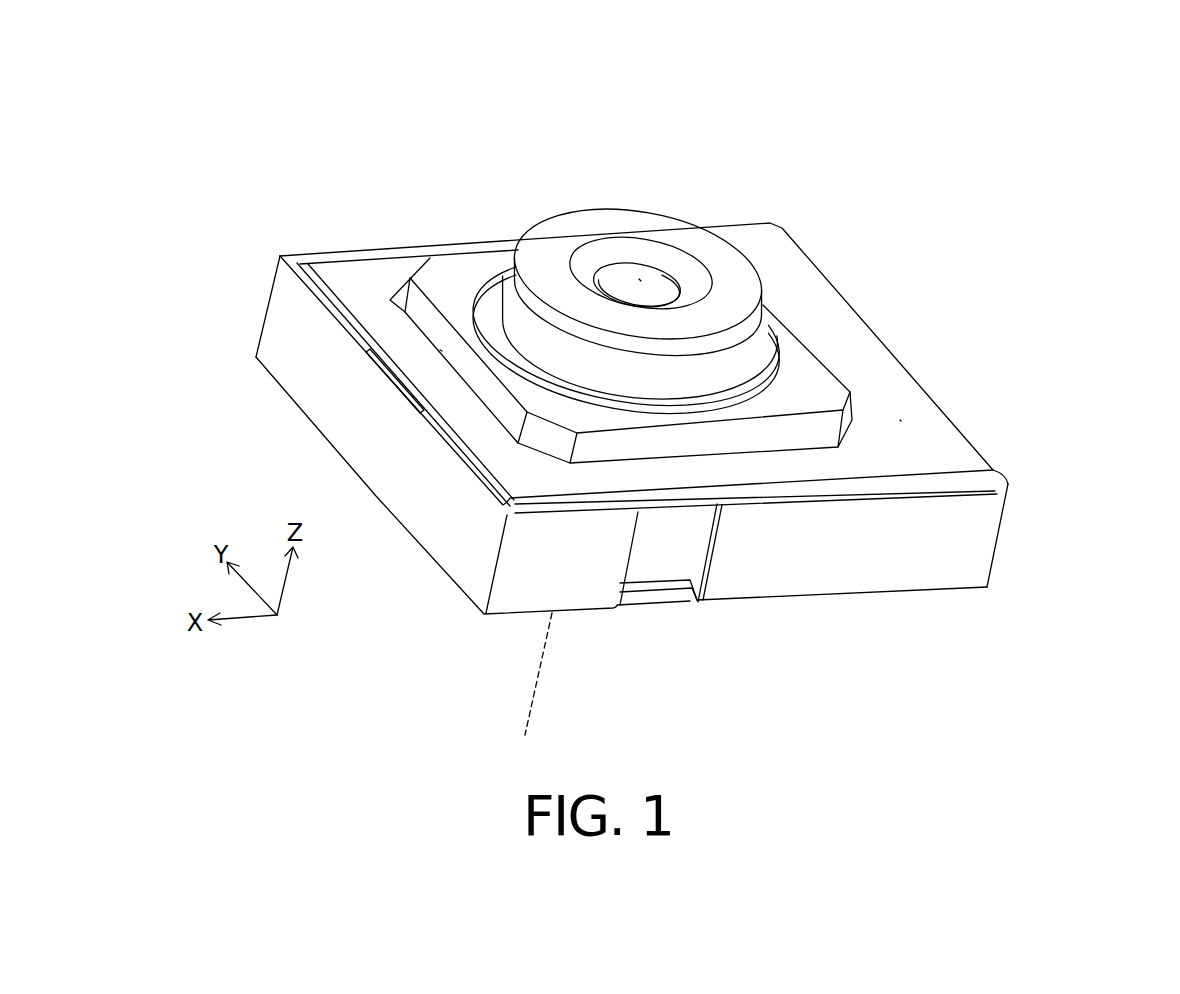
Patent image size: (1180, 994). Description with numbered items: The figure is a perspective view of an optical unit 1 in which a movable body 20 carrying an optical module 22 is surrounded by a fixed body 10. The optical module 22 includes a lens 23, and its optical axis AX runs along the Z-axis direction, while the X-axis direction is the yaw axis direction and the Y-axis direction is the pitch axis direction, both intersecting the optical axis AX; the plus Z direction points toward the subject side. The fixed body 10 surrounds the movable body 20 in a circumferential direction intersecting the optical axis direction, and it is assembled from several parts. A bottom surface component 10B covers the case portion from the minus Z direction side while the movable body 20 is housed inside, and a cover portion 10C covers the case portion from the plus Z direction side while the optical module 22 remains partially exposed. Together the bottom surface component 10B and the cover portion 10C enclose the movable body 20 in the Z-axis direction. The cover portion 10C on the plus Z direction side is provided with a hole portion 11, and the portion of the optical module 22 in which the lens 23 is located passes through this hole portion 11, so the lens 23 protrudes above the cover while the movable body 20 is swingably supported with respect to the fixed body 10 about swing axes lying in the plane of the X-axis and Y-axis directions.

The optical unit 1 is at (1058, 95).
The fixed body 10 is at (813, 261).
The bottom surface component 10B is at (672, 603).
The cover portion 10C is at (918, 437).
The hole portion 11 is at (453, 359).
The movable body 20 is at (845, 385).
The optical module 22 is at (517, 310).
The lens 23 is at (618, 277).
The optical axis AX is at (640, 280).